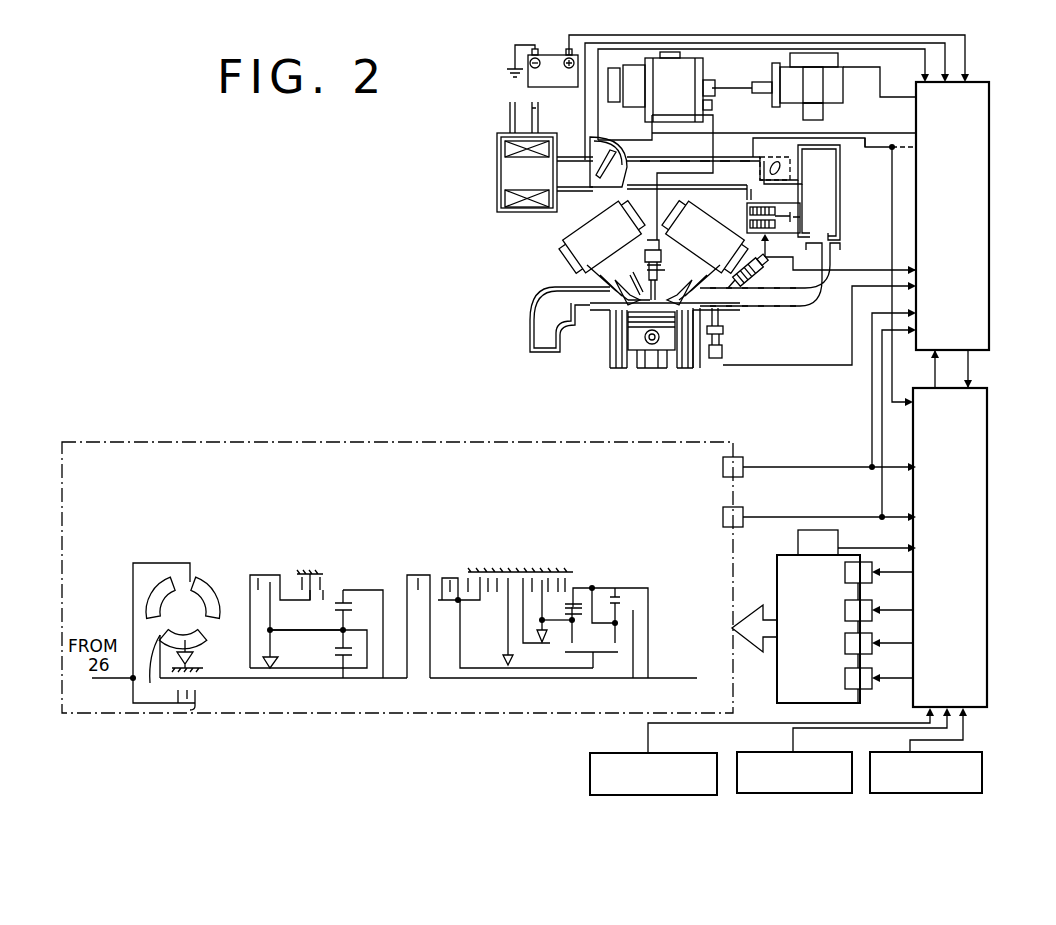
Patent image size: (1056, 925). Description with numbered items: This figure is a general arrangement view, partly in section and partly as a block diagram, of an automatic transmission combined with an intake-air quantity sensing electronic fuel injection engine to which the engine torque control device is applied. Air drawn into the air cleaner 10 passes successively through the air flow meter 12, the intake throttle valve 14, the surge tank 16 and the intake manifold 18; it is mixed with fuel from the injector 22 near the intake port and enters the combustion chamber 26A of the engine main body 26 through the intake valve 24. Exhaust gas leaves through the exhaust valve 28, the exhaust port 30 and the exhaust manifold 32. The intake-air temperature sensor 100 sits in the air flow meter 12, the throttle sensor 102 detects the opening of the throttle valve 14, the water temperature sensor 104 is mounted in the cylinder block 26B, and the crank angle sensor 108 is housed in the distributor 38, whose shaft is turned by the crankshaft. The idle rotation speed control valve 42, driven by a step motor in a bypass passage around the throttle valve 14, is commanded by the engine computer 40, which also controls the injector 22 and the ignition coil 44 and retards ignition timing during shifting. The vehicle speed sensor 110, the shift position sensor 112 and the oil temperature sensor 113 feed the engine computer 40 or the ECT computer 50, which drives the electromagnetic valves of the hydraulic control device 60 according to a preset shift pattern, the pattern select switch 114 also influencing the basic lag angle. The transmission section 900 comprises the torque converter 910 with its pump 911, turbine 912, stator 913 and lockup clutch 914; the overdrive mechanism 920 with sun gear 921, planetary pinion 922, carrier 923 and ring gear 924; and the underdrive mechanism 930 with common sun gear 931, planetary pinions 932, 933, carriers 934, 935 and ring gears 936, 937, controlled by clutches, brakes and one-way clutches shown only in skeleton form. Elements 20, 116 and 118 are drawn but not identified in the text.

The air cleaner 10 is at (517, 170).
The air flow meter 12 is at (603, 153).
The intake throttle valve 14 is at (790, 167).
The surge tank 16 is at (830, 203).
The intake manifold 18 is at (753, 300).
The exhaust valve camshaft housing 20 is at (695, 297).
The injector 22 is at (762, 290).
The intake valve 24 is at (667, 300).
The main body of the engine 26 is at (600, 357).
The combustion chamber 26A is at (627, 312).
The cylinder block 26B is at (692, 353).
The exhaust valve 28 is at (637, 300).
The exhaust port 30 is at (600, 297).
The exhaust manifold 32 is at (552, 305).
The distributor 38 is at (632, 102).
The engine computer 40 is at (990, 228).
The idle rotation speed control valve 42 is at (747, 214).
The ignition coil 44 is at (835, 85).
The ECT computer 50 is at (1004, 583).
The hydraulic control device 60 is at (773, 660).
The intake-air temperature sensor 100 is at (573, 163).
The throttle sensor 102 is at (752, 157).
The water temperature sensor 104 is at (730, 325).
The crank angle sensor 108 is at (655, 120).
The vehicle speed sensor 110 is at (737, 477).
The shift position sensor 112 is at (737, 527).
The oil temperature sensor 113 is at (822, 525).
The pattern select switch 114 is at (588, 767).
The overdrive switch 116 is at (748, 752).
The battery / brake lamp switch 118 is at (530, 78).
The transmission section 900 is at (605, 442).
The torque converter 910 is at (189, 595).
The pump 911 is at (213, 587).
The turbine 912 is at (154, 669).
The stator 913 is at (193, 647).
The lockup clutch 914 is at (198, 705).
The overdrive mechanism 920 is at (318, 579).
The sun gear 921 is at (335, 653).
The planetary pinion 922 is at (335, 612).
The carrier 923 is at (357, 606).
The ring gear 924 is at (328, 596).
The underdrive mechanism 930 is at (550, 593).
The common sun gear 931 is at (603, 652).
The planetary pinion 932 is at (588, 625).
The planetary pinion 933 is at (620, 600).
The carrier 934 is at (557, 623).
The carrier 935 is at (618, 624).
The ring gear 936 is at (573, 588).
The ring gear 937 is at (618, 595).